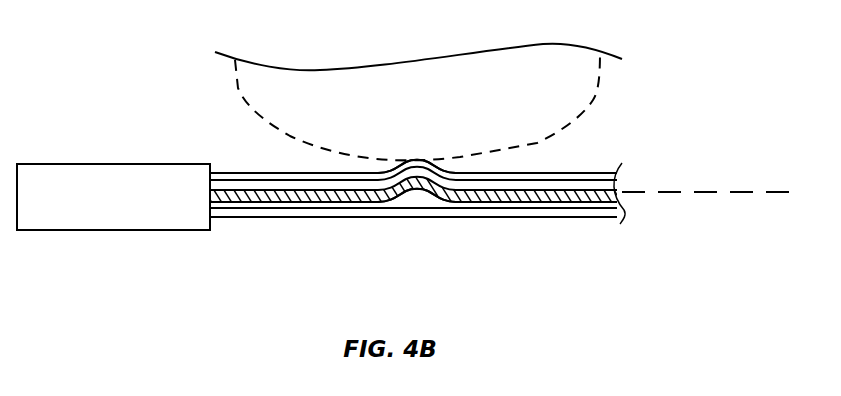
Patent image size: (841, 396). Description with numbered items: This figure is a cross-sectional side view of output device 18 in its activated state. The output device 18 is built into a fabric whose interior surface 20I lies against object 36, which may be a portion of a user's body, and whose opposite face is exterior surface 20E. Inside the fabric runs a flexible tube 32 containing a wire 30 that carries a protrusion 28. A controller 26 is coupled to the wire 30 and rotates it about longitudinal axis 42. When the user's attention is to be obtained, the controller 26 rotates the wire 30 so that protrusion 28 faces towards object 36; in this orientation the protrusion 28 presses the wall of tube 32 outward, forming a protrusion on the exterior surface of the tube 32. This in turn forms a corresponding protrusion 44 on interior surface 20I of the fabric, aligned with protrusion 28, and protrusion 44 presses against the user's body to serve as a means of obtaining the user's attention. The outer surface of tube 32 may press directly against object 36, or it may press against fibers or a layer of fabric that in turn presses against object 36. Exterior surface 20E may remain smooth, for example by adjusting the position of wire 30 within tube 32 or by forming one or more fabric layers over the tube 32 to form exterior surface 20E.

The output device 18 is at (688, 63).
The object 36 is at (255, 85).
The protrusion 44 is at (420, 158).
The interior surface 20I is at (590, 165).
The exterior surface 20E is at (329, 228).
The controller 26 is at (128, 231).
The protrusion 28 is at (408, 195).
The wire 30 is at (553, 204).
The tube 32 is at (257, 214).
The longitudinal axis 42 is at (742, 194).